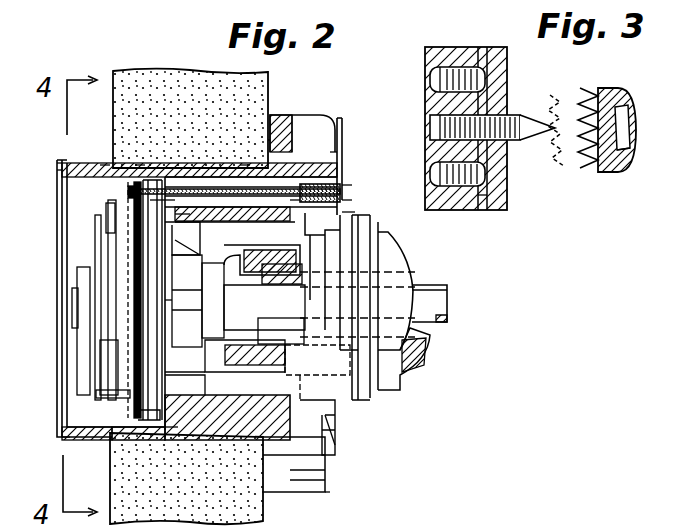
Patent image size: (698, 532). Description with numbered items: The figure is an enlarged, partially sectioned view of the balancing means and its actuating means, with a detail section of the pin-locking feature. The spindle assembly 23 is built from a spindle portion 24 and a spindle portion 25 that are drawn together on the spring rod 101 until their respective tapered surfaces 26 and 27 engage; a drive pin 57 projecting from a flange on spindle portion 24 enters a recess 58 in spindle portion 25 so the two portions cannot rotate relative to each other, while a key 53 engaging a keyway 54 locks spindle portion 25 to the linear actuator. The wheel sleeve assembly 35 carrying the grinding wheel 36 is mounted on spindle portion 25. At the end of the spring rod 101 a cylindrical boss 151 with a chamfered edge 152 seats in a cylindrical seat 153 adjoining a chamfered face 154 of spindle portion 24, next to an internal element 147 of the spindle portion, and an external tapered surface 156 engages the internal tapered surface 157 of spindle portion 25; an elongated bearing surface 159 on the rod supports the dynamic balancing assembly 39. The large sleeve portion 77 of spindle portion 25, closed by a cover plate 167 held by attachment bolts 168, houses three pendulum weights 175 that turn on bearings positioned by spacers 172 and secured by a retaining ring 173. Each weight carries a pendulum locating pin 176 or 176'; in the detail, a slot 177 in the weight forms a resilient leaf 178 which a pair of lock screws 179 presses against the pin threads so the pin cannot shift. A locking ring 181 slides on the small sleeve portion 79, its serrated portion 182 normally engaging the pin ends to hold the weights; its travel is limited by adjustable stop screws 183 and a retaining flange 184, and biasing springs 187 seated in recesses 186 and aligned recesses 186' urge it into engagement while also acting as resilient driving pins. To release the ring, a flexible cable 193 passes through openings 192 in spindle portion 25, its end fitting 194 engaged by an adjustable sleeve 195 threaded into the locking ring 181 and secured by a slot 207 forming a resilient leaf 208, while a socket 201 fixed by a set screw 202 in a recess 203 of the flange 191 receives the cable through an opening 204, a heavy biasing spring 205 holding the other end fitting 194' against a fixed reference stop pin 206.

In FIG. 2, the grinding wheel 36 is at (162, 70).
In FIG. 2, the spindle portion 25 is at (233, 432).
In FIG. 2, the dynamic balancing assembly 39 is at (72, 364).
In FIG. 2, the bearing surface 159 is at (57, 336).
In FIG. 2, the attachment bolts 168 is at (60, 440).
In FIG. 2, the socket 201 is at (302, 133).
In FIG. 2, the longitudinally extending openings 192 is at (266, 145).
In FIG. 2, the opening 204 is at (312, 166).
In FIG. 2, the set screw 202 is at (338, 160).
In FIG. 2, the end fitting 194' is at (364, 165).
In FIG. 2, the flexible cable 193 is at (251, 199).
In FIG. 2, the biasing springs 187 is at (237, 186).
In FIG. 3, the biasing springs 187 is at (630, 118).
In FIG. 2, the recesses 186 is at (188, 204).
In FIG. 3, the recesses 186 is at (645, 152).
In FIG. 2, the biasing spring 205 is at (298, 199).
In FIG. 2, the recesses 186' is at (212, 222).
In FIG. 2, the fixed reference stop pin 206 is at (345, 192).
In FIG. 2, the recess 203 is at (350, 203).
In FIG. 2, the flange 191 is at (355, 214).
In FIG. 2, the sleeve portion 77 is at (72, 166).
In FIG. 2, the end fitting 194 is at (93, 149).
In FIG. 2, the adjustable sleeve 195 is at (139, 168).
In FIG. 2, the slot 207 is at (170, 168).
In FIG. 2, the resilient leaf 208 is at (247, 167).
In FIG. 2, the pendulum locating pin 176 is at (109, 190).
In FIG. 3, the pendulum locating pin 176 is at (492, 103).
In FIG. 2, the retaining flange 184 is at (106, 232).
In FIG. 2, the serrated portion 182 is at (134, 370).
In FIG. 3, the serrated portion 182 is at (576, 100).
In FIG. 2, the pendulum weights 175 is at (90, 255).
In FIG. 3, the pendulum weights 175 is at (450, 55).
In FIG. 2, the cover plate 167 is at (62, 270).
In FIG. 2, the retaining ring 173 is at (73, 300).
In FIG. 2, the spacers 172 is at (111, 343).
In FIG. 2, the pendulum locating pin 176' is at (112, 407).
In FIG. 2, the locking ring 181 is at (116, 438).
In FIG. 3, the locking ring 181 is at (612, 100).
In FIG. 2, the adjustable stop screws 183 is at (172, 432).
In FIG. 2, the internal tapered surface 157 is at (188, 238).
In FIG. 2, the external tapered surface 156 is at (189, 301).
In FIG. 2, the sleeve portion 79 is at (160, 305).
In FIG. 2, the cylindrical boss 151 is at (219, 300).
In FIG. 2, the chamfered face 154 is at (226, 258).
In FIG. 2, the cylindrical seat 153 is at (282, 276).
In FIG. 2, the chamfered edge 152 is at (264, 307).
In FIG. 2, the block 147 is at (290, 300).
In FIG. 2, the tapered surface 27 is at (252, 357).
In FIG. 2, the tapered surface 26 is at (317, 372).
In FIG. 2, the key 53 is at (200, 362).
In FIG. 2, the keyway 54 is at (240, 410).
In FIG. 2, the recess 58 is at (265, 445).
In FIG. 2, the wheel sleeve assembly 35 is at (295, 496).
In FIG. 2, the drive pin 57 is at (335, 448).
In FIG. 2, the spindle portion 24 is at (398, 262).
In FIG. 2, the spring rod 101 is at (458, 304).
In FIG. 2, the spindle assembly 23 is at (403, 380).
In FIG. 3, the resilient leaf 178 is at (500, 56).
In FIG. 3, the slot 177 is at (480, 199).
In FIG. 3, the lock screws 179 is at (433, 80).